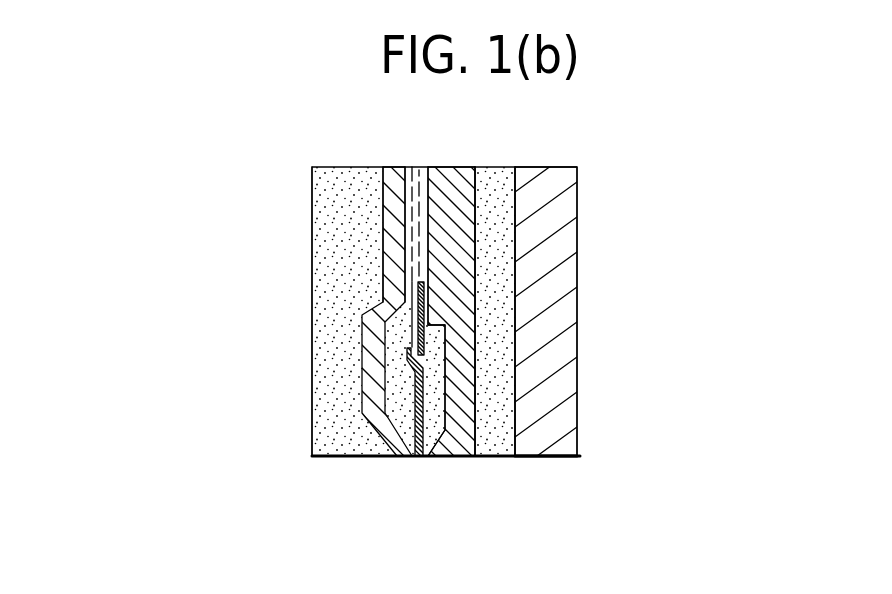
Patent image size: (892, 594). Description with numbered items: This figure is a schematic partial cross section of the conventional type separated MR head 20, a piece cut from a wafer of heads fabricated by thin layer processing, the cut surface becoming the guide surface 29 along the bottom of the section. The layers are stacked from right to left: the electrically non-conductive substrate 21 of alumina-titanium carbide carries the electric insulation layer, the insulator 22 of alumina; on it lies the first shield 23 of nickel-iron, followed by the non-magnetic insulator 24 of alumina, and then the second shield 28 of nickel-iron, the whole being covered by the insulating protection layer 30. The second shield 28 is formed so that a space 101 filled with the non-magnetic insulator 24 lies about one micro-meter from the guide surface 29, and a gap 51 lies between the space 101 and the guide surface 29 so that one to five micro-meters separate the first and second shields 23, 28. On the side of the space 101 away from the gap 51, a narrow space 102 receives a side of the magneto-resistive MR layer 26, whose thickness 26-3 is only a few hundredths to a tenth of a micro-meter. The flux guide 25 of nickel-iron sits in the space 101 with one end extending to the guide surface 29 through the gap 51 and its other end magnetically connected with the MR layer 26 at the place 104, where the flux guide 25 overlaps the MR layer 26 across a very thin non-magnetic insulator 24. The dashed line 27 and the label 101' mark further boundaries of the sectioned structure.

The separated MR head 20 is at (636, 178).
The substrate 21 is at (557, 440).
The insulator 22 is at (497, 383).
The first shield 23 is at (447, 330).
The non-magnetic insulator 24 is at (380, 413).
The flux guide 25 is at (400, 383).
The MR layer 26 is at (440, 310).
The thickness of MR layer 26-3 is at (385, 292).
The gap layer 27 is at (413, 167).
The second shield 28 is at (448, 297).
The guide surface 29 is at (367, 466).
The protection layer 30 is at (314, 188).
The gap 51 is at (422, 466).
The space 101 is at (477, 471).
The recording track edge 101' is at (567, 475).
The narrow space 102 is at (480, 262).
The magnetic connection place 104 is at (455, 358).